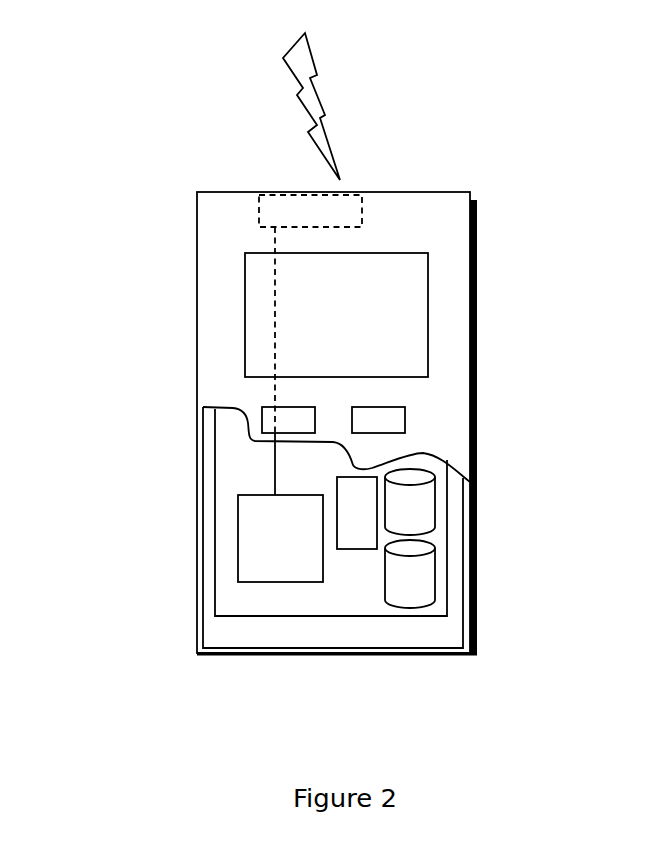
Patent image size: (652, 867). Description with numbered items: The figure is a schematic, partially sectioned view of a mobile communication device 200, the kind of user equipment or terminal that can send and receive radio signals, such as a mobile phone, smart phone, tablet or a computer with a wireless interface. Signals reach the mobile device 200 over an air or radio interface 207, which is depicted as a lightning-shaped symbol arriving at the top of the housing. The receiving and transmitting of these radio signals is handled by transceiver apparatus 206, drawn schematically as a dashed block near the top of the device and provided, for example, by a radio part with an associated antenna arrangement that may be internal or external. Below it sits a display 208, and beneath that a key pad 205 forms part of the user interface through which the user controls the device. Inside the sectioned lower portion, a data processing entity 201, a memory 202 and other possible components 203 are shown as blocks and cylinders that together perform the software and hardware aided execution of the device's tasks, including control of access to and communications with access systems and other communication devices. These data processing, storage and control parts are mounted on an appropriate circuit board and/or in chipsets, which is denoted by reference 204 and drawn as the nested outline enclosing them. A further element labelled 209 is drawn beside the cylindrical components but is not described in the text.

The communication device 200 is at (197, 242).
The data processing entity 201 is at (243, 522).
The memory 202 is at (382, 588).
The other possible components 203 is at (350, 468).
The circuit board 204 is at (237, 602).
The key pad 205 is at (262, 421).
The transceiver apparatus 206 is at (352, 205).
The radio interface 207 is at (338, 132).
The display 208 is at (258, 303).
The battery 209 is at (435, 493).